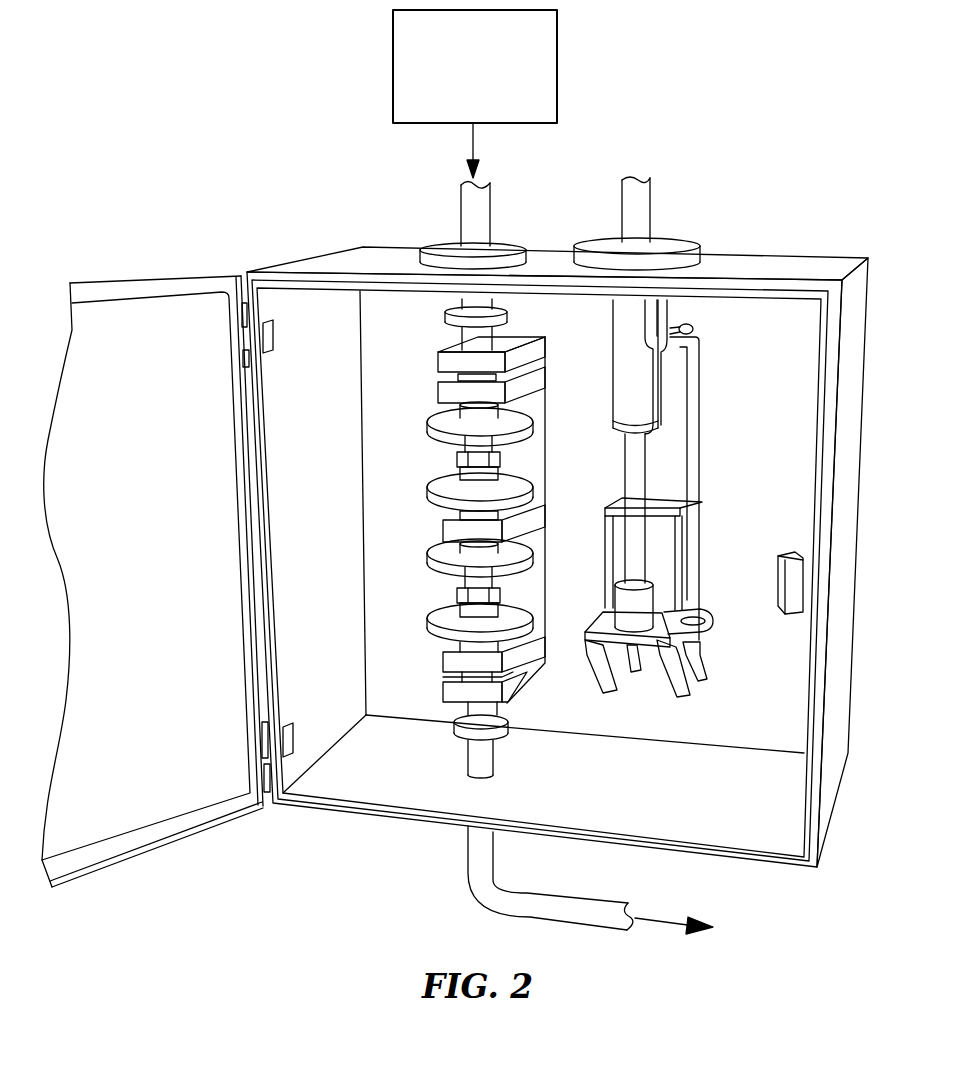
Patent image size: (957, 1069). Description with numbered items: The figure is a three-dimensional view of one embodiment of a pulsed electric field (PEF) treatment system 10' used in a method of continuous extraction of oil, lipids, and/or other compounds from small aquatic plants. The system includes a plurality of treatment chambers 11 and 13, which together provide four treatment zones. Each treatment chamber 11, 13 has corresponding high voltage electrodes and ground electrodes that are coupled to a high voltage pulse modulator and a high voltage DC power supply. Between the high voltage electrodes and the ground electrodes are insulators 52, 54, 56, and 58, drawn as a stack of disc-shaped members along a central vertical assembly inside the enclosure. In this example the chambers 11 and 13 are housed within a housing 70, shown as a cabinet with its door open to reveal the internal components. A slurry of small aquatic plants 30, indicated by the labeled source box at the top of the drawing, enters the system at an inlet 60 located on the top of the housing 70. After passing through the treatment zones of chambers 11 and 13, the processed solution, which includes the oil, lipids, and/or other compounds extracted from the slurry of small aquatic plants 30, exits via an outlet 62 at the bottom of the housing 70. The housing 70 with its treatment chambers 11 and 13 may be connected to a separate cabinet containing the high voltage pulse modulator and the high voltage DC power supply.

The PEF treatment system 10' is at (455, 472).
The slurry of small aquatic plants 30 is at (489, 38).
The inlet 60 is at (441, 246).
The housing 70 is at (790, 262).
The treatment chamber 11 is at (405, 443).
The treatment chamber 13 is at (405, 584).
The insulator 52 is at (425, 416).
The insulator 54 is at (425, 488).
The insulator 56 is at (425, 554).
The insulator 58 is at (425, 619).
The outlet 62 is at (490, 893).